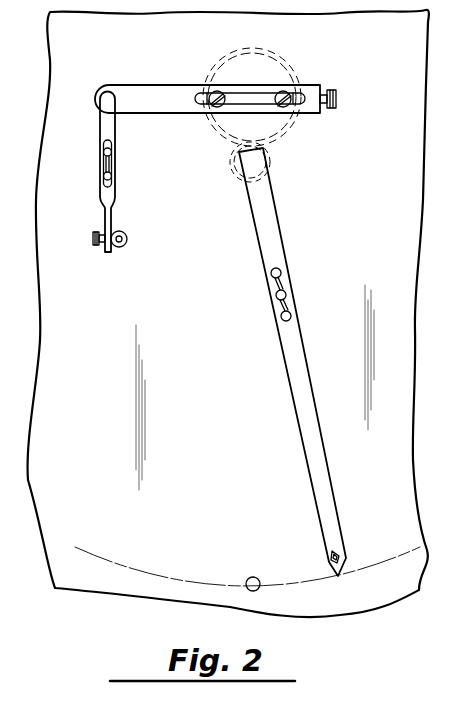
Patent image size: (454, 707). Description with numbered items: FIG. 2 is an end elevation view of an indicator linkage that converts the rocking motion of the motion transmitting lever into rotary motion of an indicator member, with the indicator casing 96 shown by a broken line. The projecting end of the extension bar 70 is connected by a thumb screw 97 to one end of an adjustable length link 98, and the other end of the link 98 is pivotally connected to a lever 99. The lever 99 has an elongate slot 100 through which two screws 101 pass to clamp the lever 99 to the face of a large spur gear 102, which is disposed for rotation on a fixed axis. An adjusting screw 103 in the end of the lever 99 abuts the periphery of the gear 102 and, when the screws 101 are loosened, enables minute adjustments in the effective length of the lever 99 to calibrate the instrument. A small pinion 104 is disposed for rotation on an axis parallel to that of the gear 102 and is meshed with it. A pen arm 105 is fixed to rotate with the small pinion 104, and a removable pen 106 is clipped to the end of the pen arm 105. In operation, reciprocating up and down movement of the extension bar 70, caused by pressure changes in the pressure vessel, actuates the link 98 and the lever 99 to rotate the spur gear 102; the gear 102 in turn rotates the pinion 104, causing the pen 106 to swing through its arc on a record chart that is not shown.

The indicator casing 96 is at (50, 52).
The thumb screw 97 is at (95, 246).
The adjustable length link 98 is at (100, 135).
The lever 99 is at (172, 93).
The elongate slot 100 is at (254, 97).
The screws 101 is at (217, 108).
The large spur gear 102 is at (286, 70).
The adjusting screw 103 is at (336, 98).
The small pinion 104 is at (270, 150).
The pen arm 105 is at (284, 230).
The removable pen 106 is at (333, 520).
The extension bar 70 is at (126, 235).